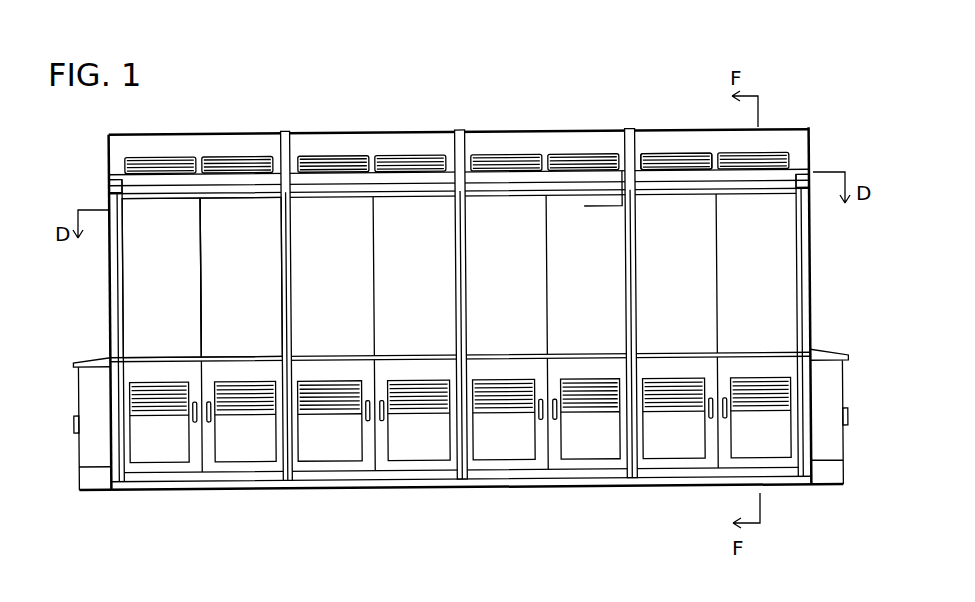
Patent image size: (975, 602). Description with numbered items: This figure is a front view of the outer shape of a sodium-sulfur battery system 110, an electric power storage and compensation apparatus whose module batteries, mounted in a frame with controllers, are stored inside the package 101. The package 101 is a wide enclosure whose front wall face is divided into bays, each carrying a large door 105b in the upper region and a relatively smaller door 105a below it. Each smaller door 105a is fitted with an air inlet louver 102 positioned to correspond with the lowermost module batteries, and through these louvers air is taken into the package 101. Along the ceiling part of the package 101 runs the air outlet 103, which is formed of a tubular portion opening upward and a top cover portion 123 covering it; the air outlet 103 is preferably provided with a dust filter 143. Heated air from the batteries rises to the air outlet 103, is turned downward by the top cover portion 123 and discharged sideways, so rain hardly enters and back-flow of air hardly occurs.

The sodium-sulfur battery system 110 is at (843, 103).
The package 101 is at (812, 259).
The air inlet louver 102 is at (140, 393).
The top cover portion 123 is at (494, 142).
The air outlet 103 is at (587, 155).
The dust filter 143 is at (670, 155).
The large door 105b is at (223, 286).
The door 105a is at (230, 468).